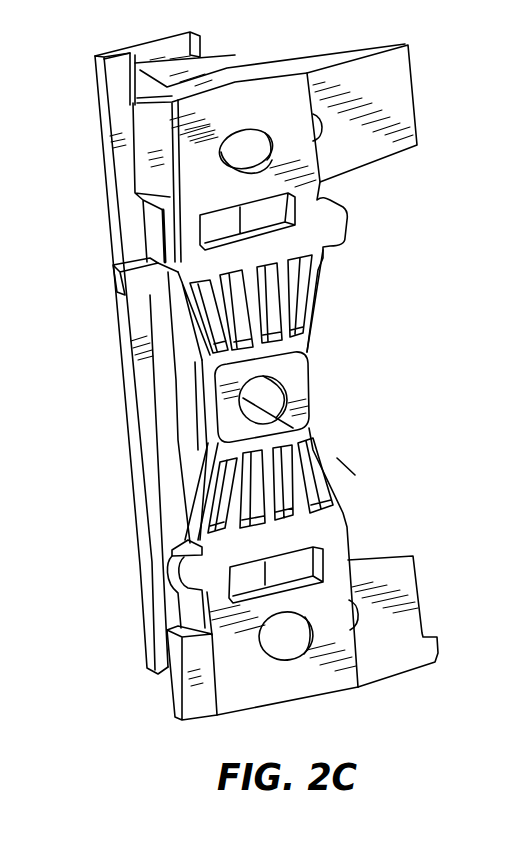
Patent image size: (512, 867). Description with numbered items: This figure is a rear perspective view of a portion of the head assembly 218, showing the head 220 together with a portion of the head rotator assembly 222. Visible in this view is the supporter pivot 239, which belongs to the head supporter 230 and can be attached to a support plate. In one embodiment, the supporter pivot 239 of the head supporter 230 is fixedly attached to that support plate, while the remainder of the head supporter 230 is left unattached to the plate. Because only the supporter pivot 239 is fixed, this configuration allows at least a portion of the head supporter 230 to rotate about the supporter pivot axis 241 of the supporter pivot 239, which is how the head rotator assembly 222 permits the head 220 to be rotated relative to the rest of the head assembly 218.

The head 220 is at (108, 212).
The head rotator assembly 222 is at (283, 253).
The head supporter 230 is at (315, 326).
The supporter pivot 239 is at (298, 393).
The supporter pivot axis 241 is at (366, 493).
The head assembly 218 is at (319, 496).